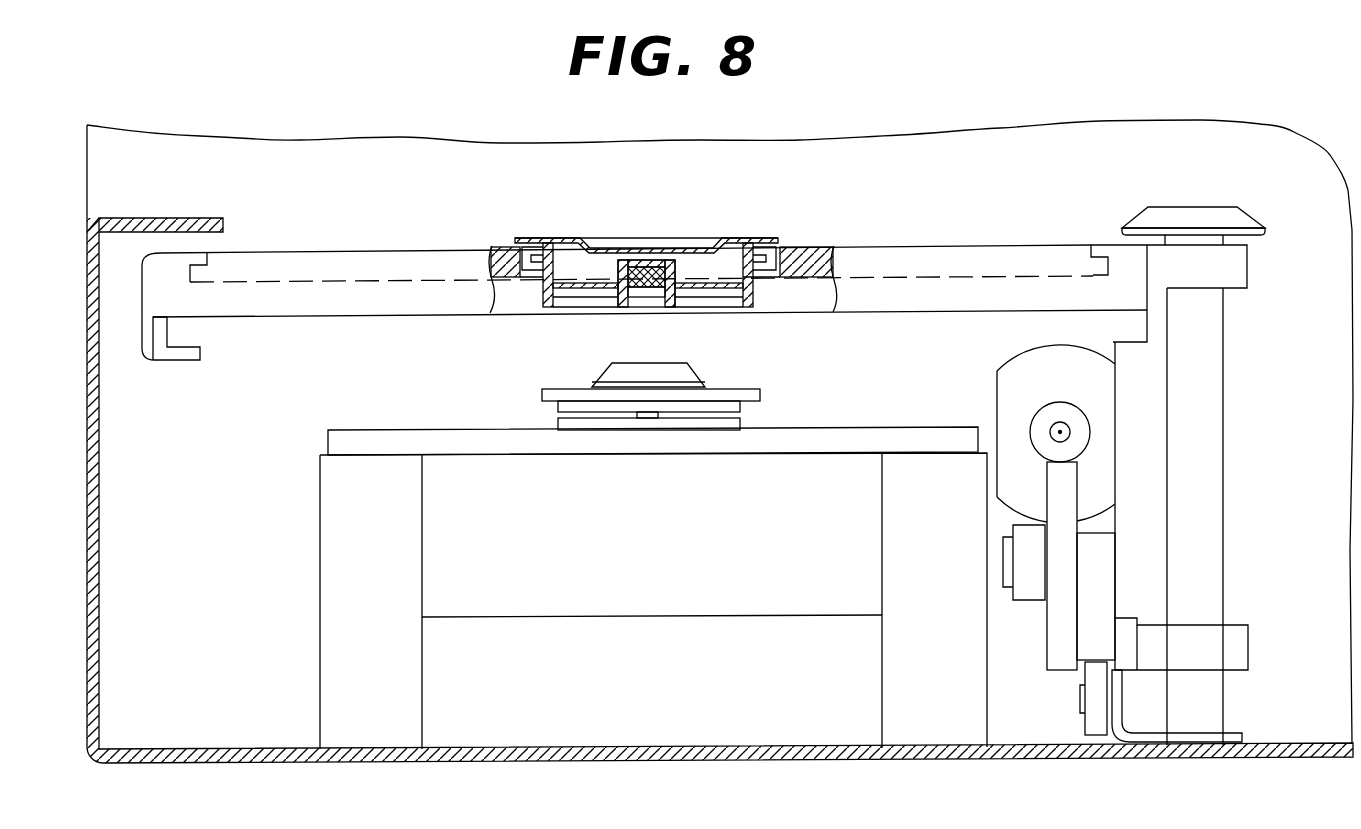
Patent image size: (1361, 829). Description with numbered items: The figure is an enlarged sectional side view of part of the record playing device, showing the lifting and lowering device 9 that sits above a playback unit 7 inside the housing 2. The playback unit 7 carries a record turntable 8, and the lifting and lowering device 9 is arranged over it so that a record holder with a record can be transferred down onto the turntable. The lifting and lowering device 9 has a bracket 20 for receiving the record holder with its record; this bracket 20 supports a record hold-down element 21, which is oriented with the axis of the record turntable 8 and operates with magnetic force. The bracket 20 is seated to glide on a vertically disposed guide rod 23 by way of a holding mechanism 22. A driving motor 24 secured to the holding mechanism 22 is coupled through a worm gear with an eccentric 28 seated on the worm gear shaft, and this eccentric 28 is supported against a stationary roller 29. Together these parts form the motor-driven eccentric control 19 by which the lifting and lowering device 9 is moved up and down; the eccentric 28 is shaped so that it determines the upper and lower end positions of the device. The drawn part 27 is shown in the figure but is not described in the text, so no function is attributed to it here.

The housing 2 is at (93, 593).
The playback unit 7 is at (662, 531).
The record turntable 8 is at (730, 388).
The lifting and lowering device 9 is at (983, 240).
The eccentric control 19 is at (1038, 676).
The bracket 20 is at (384, 248).
The record hold-down element 21 is at (683, 238).
The holding mechanism 22 is at (1237, 267).
The guide rod 23 is at (1213, 463).
The driving motor 24 is at (1005, 385).
The arm 27 is at (1053, 628).
The eccentric 28 is at (1100, 553).
The roller 29 is at (1093, 727).